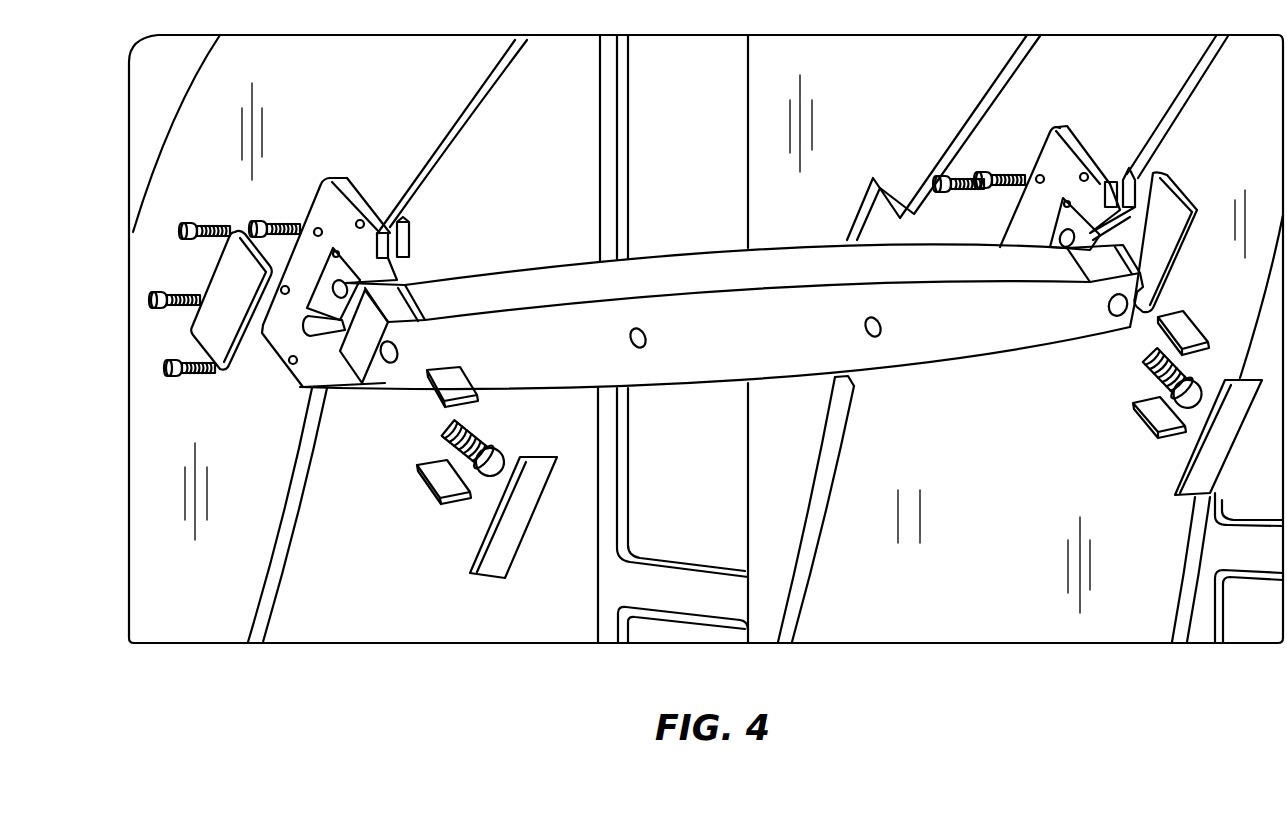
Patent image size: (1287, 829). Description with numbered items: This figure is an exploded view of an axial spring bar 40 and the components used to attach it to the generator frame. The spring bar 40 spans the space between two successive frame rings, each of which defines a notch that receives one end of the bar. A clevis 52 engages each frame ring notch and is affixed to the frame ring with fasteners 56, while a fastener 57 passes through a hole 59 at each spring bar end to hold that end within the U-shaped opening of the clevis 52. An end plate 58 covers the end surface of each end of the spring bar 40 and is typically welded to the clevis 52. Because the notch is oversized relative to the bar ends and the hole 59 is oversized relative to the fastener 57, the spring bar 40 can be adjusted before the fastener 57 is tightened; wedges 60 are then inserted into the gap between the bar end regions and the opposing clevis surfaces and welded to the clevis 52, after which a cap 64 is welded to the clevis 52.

The axial spring bar 40 is at (767, 253).
The clevis 52 is at (410, 242).
The fasteners 56 is at (165, 368).
The fastener 57 is at (473, 435).
The end plate 58 is at (225, 283).
The hole 59 is at (391, 363).
The wedges 60 is at (460, 366).
The cap 64 is at (507, 547).